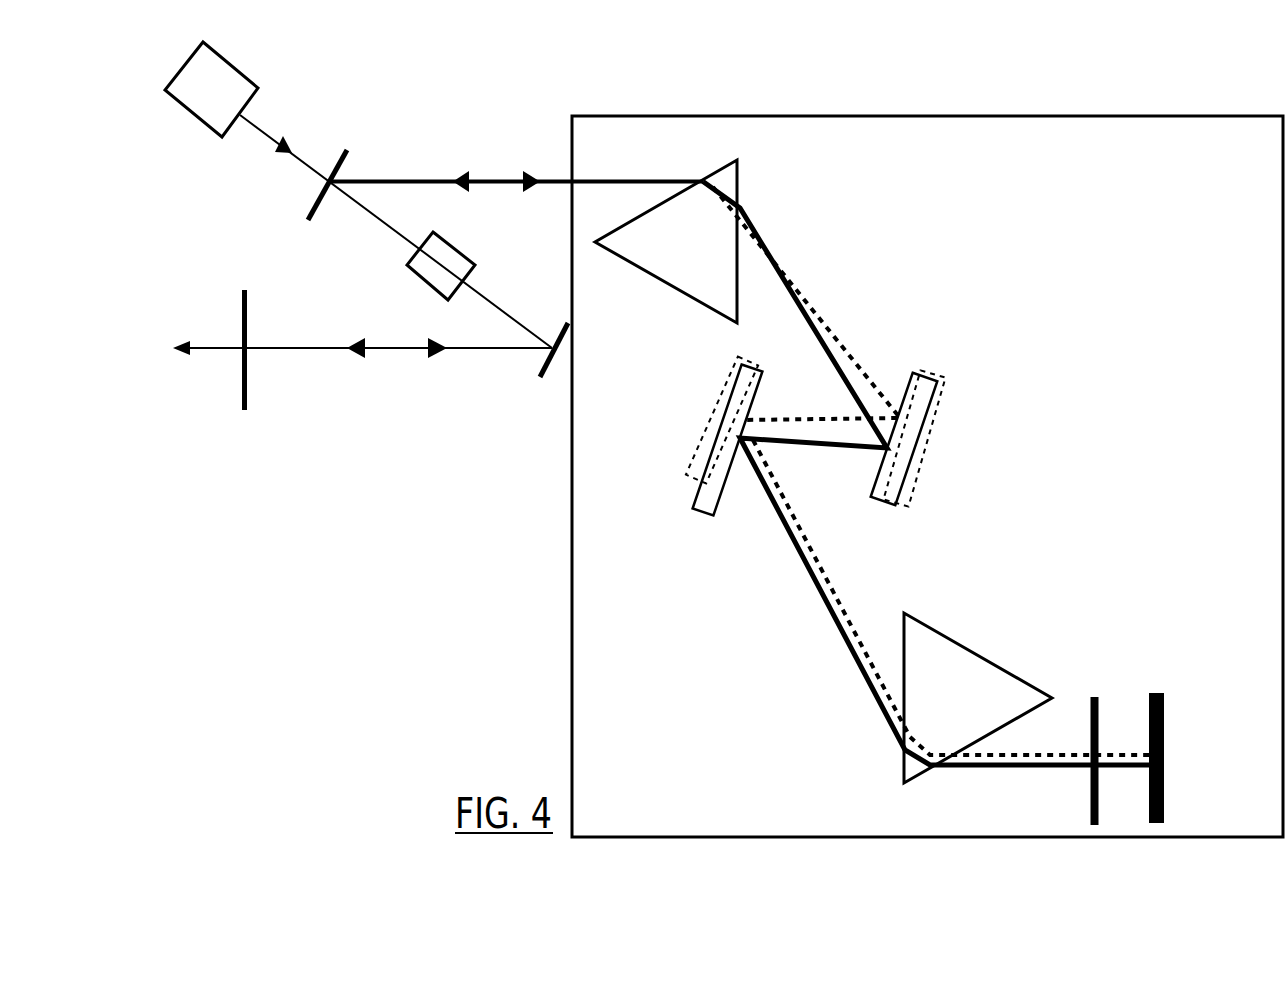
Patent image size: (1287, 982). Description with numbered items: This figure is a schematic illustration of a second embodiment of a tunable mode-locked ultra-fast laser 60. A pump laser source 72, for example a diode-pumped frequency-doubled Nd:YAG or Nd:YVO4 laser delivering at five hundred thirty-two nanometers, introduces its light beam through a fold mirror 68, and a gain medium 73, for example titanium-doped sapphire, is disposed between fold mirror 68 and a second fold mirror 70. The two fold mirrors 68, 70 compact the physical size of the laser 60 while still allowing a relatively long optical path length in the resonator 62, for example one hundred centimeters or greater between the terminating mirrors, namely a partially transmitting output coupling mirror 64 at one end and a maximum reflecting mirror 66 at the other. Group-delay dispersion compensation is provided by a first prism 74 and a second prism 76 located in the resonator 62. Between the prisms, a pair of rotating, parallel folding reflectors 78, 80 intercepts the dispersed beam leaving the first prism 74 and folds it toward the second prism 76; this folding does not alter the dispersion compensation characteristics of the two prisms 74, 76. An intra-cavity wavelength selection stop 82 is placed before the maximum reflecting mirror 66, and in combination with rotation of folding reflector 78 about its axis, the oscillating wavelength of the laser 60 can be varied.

The tunable mode-locked ultra-fast laser 60 is at (480, 82).
The resonator 62 is at (1052, 115).
The output coupling mirror 64 is at (248, 380).
The maximum reflecting mirror 66 is at (1165, 723).
The fold mirror 68 is at (307, 212).
The fold mirror 70 is at (548, 374).
The laser source 72 is at (190, 112).
The gain medium 73 is at (417, 276).
The first prism 74 is at (667, 287).
The second prism 76 is at (960, 643).
The folding reflector 78 is at (915, 375).
The folding reflector 80 is at (703, 513).
The intra-cavity wavelength selection stop 82 is at (1100, 715).